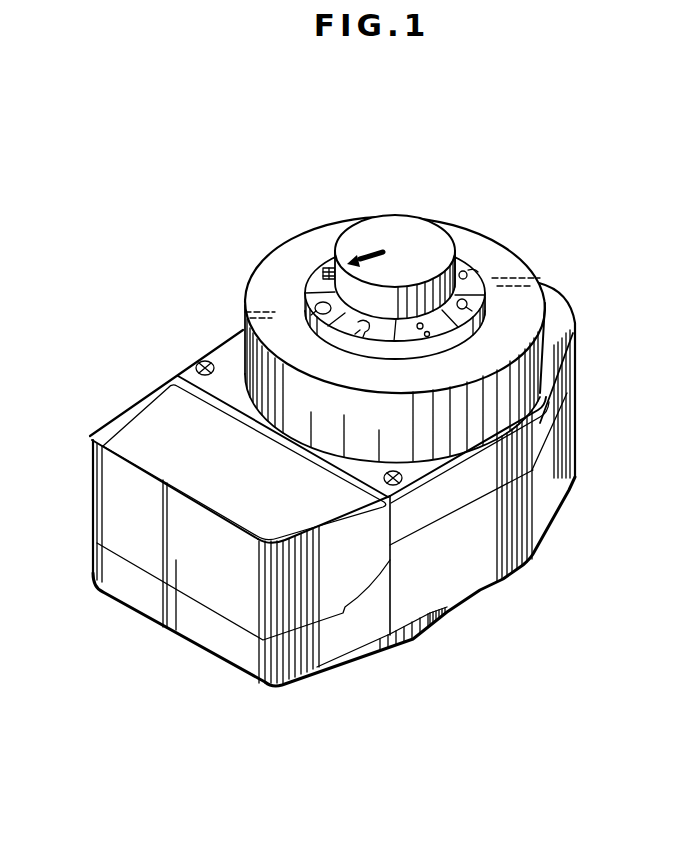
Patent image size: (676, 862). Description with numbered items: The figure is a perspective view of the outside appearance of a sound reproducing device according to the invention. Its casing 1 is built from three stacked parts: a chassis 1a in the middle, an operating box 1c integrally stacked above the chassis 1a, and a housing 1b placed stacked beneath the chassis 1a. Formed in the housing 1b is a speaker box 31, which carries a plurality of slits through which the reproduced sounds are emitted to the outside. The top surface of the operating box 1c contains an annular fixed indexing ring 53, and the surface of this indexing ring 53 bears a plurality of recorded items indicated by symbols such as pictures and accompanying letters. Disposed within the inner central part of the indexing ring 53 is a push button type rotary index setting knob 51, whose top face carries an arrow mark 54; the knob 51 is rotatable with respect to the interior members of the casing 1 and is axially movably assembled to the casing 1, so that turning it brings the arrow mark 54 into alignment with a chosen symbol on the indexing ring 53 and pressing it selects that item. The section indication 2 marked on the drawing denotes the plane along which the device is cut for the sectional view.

The casing 1 is at (188, 358).
The chassis 1a is at (232, 606).
The housing 1b is at (516, 573).
The operating box 1c is at (451, 233).
The speaker box 31 is at (416, 643).
The rotary index setting knob 51 is at (364, 231).
The annular fixed indexing ring 53 is at (307, 280).
The arrow mark 54 is at (316, 303).
The section line 2- 2 is at (192, 599).